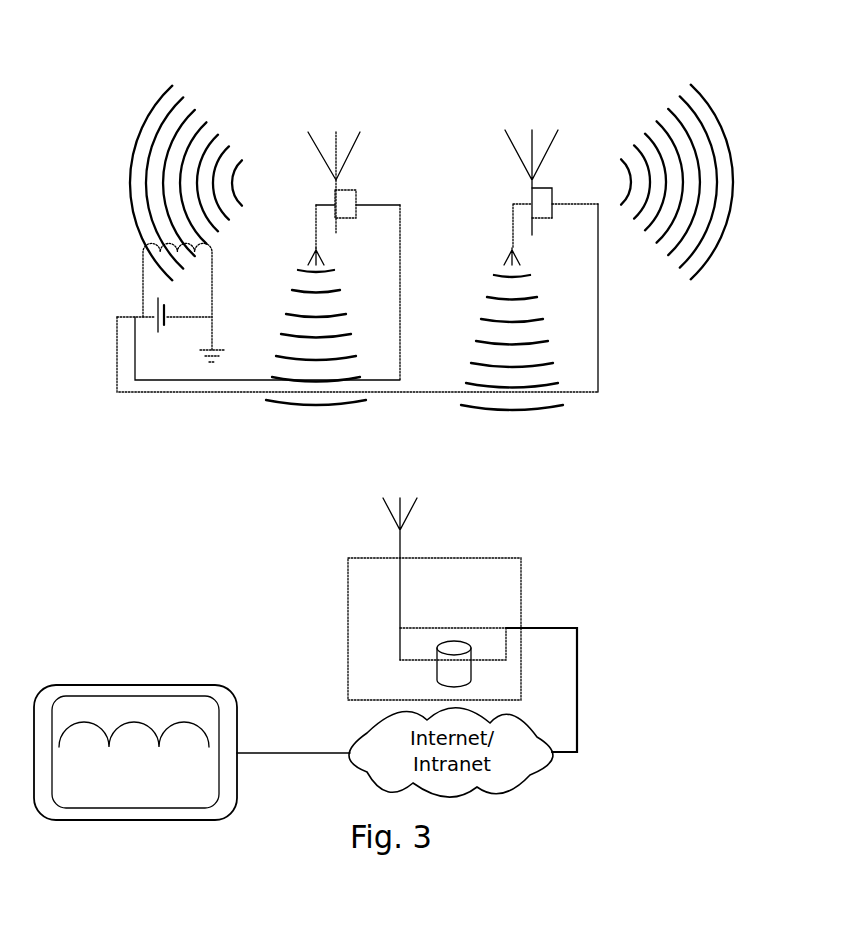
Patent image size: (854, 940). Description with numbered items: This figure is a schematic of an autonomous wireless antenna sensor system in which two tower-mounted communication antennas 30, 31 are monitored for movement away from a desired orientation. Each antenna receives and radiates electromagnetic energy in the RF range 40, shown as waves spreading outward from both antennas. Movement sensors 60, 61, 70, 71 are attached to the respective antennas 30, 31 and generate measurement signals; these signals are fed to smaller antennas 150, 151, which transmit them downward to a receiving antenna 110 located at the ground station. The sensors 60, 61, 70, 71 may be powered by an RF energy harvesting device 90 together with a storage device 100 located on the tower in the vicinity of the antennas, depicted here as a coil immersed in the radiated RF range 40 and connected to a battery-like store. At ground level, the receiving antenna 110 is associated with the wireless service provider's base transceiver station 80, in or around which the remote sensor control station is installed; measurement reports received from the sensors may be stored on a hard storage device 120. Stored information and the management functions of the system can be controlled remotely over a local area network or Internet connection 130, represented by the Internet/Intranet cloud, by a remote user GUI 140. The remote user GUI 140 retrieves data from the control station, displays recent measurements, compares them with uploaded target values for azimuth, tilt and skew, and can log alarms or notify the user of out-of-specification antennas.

The antenna 30 is at (346, 133).
The antenna 31 is at (542, 115).
The RF range 40 is at (420, 183).
The movement sensor 60 is at (347, 228).
The movement sensor 61 is at (558, 242).
The movement sensor 70 is at (363, 196).
The movement sensor 71 is at (557, 190).
The base transceiver station 80 is at (497, 547).
The RF energy harvesting device 90 is at (133, 262).
The storage device 100 is at (170, 322).
The receiving antenna 110 is at (421, 492).
The hard storage device 120 is at (430, 672).
The Internet connection 130 is at (595, 633).
The remote user GUI 140 is at (115, 667).
The smaller antenna 150 is at (305, 217).
The smaller antenna 151 is at (507, 217).